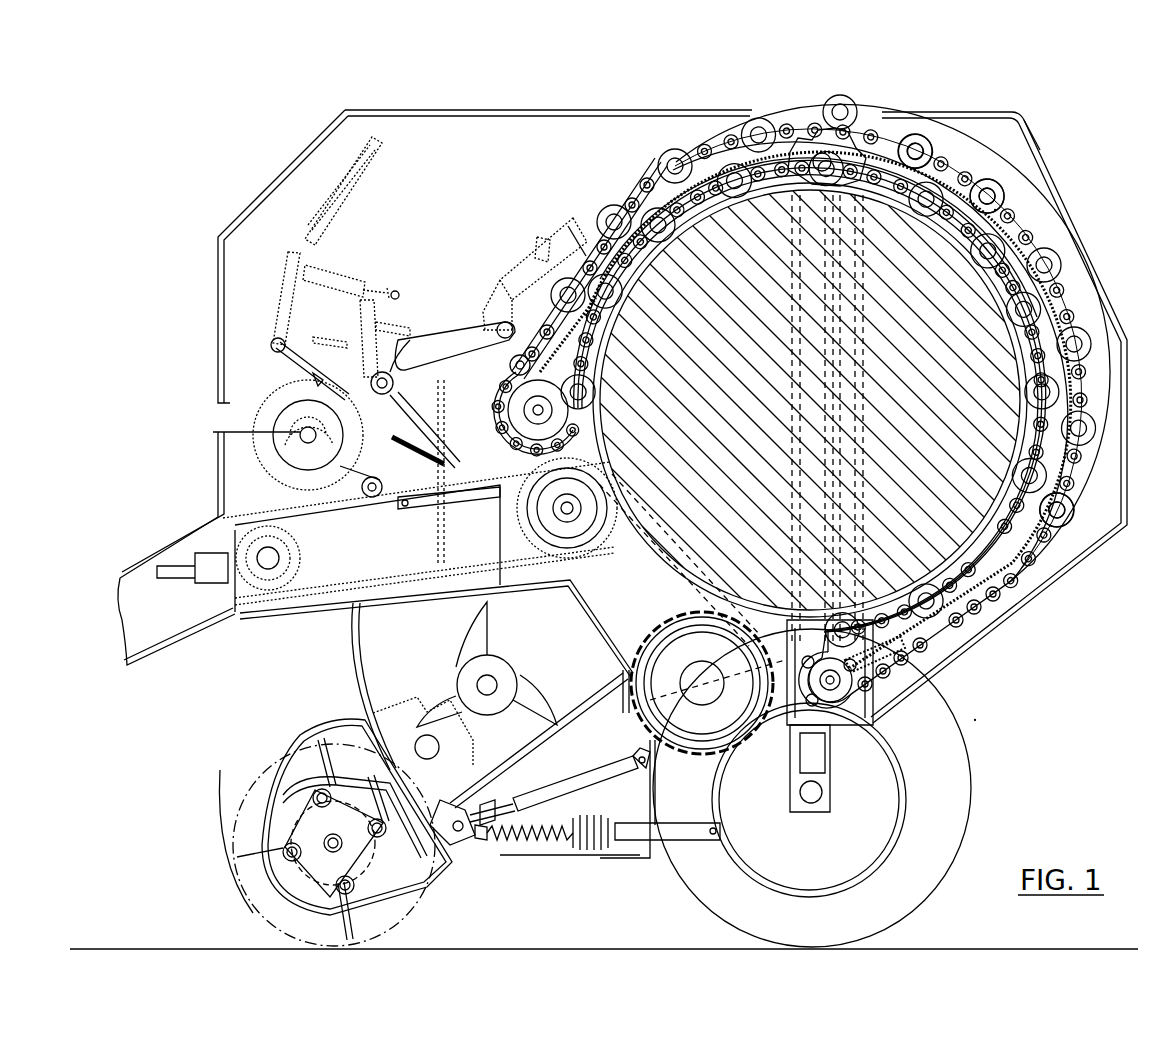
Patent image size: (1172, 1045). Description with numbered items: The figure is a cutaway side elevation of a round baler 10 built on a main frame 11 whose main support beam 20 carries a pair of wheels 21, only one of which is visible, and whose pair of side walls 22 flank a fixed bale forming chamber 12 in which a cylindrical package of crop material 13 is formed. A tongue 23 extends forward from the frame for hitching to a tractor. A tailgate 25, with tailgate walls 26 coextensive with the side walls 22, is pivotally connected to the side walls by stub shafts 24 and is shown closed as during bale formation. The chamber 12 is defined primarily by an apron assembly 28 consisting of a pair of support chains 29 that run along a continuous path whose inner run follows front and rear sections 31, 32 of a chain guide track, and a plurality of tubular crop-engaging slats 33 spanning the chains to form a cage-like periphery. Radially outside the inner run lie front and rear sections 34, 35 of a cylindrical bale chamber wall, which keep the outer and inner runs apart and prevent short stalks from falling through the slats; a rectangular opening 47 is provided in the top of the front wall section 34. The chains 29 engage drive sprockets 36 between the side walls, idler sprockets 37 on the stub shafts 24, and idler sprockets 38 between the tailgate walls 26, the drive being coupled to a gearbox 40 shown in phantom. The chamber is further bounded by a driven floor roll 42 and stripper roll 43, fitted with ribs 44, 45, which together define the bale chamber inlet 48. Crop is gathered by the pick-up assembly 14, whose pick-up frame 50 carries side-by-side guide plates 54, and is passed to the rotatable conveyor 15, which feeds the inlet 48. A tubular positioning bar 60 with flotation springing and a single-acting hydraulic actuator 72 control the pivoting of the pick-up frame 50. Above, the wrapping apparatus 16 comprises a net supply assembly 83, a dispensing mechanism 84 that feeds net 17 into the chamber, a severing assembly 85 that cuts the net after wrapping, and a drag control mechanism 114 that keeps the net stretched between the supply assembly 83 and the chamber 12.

The round baler 10 is at (176, 349).
The main frame 11 is at (975, 708).
The fixed bale forming chamber 12 is at (1084, 202).
The cylindrical package of crop material 13 is at (1010, 412).
The pick-up assembly 14 is at (195, 800).
The rotatable conveyor 15 is at (480, 632).
The wrapping apparatus 16 is at (292, 203).
The net 17 is at (365, 498).
The main support beam 20 is at (832, 763).
The wheels 21 is at (945, 842).
The side walls 22 is at (450, 197).
The tongue 23 is at (158, 640).
The stub shafts 24 is at (830, 100).
The tailgate 25 is at (1040, 165).
The tailgate walls 26 is at (1009, 162).
The apron assembly 28 is at (1100, 455).
The support chains 29 is at (1060, 545).
The front section of chain guide track 31 is at (608, 212).
The rear section of chain guide track 32 is at (1048, 330).
The crop-engaging slats 33 is at (985, 192).
The front section of bale chamber wall 34 is at (648, 215).
The rear section of bale chamber wall 35 is at (1055, 260).
The drive sprockets 36 is at (505, 397).
The idler sprockets 37 is at (852, 150).
The idler sprockets 38 is at (950, 668).
The gearbox 40 is at (262, 598).
The floor roll 42 is at (660, 845).
The stripper roll 43 is at (553, 515).
The ribs 44 is at (722, 754).
The ribs 45 is at (596, 545).
The rectangular opening 47 is at (672, 160).
The bale chamber inlet 48 is at (575, 631).
The pick-up frame 50 is at (428, 860).
The guide plates 54 is at (275, 805).
The tubular positioning bar 60 is at (652, 845).
The single-acting hydraulic actuator 72 is at (562, 775).
The net supply assembly 83 is at (240, 472).
The dispensing mechanism 84 is at (450, 310).
The severing assembly 85 is at (430, 528).
The drag control mechanism 114 is at (350, 262).